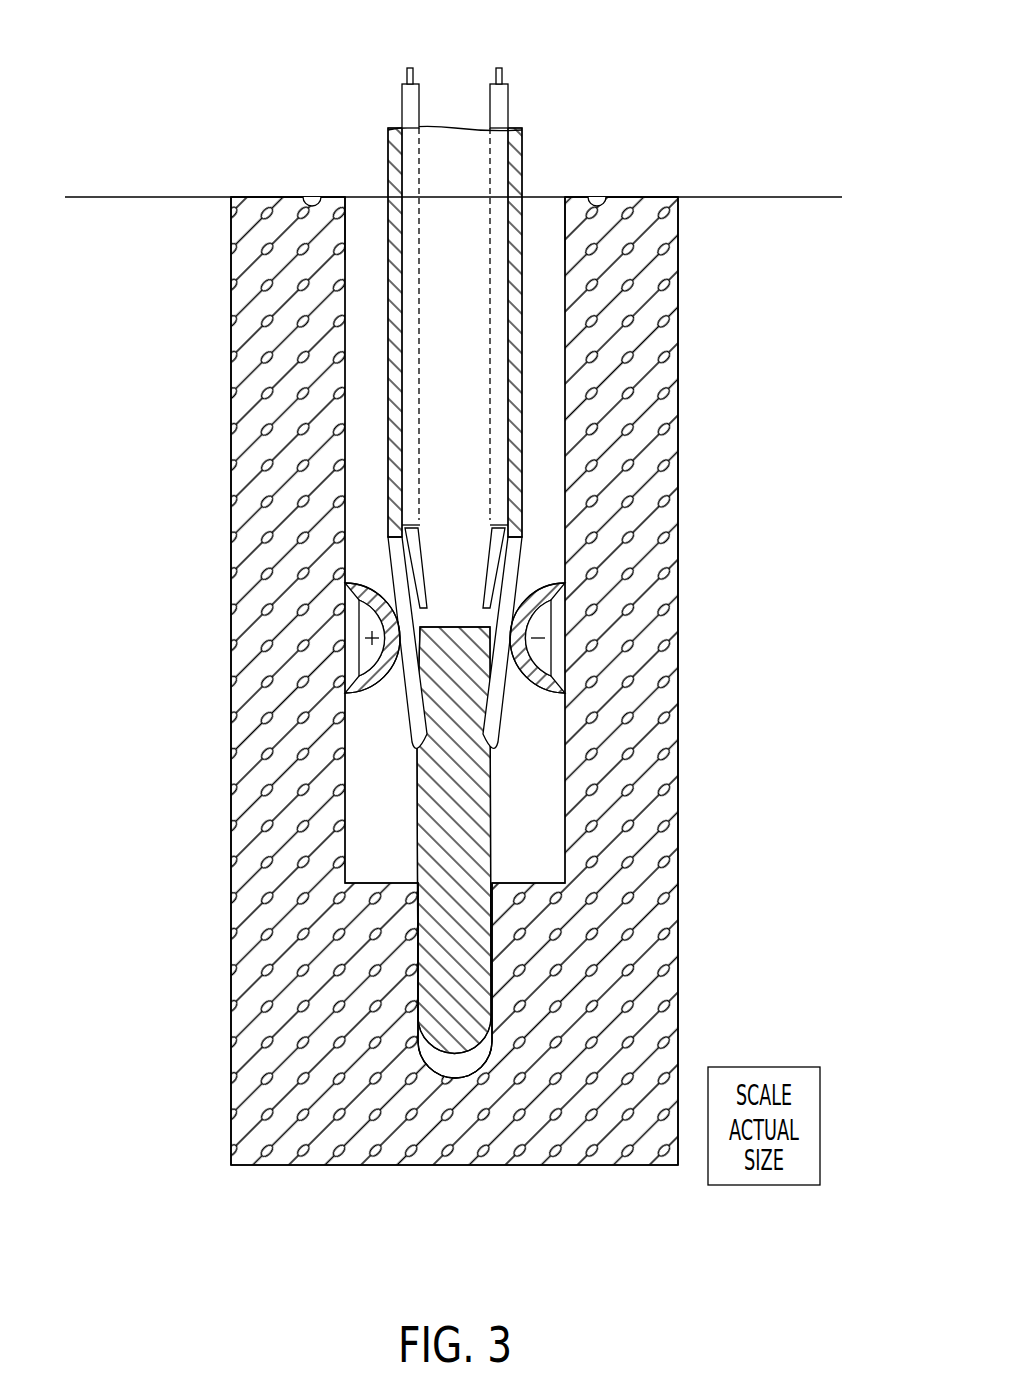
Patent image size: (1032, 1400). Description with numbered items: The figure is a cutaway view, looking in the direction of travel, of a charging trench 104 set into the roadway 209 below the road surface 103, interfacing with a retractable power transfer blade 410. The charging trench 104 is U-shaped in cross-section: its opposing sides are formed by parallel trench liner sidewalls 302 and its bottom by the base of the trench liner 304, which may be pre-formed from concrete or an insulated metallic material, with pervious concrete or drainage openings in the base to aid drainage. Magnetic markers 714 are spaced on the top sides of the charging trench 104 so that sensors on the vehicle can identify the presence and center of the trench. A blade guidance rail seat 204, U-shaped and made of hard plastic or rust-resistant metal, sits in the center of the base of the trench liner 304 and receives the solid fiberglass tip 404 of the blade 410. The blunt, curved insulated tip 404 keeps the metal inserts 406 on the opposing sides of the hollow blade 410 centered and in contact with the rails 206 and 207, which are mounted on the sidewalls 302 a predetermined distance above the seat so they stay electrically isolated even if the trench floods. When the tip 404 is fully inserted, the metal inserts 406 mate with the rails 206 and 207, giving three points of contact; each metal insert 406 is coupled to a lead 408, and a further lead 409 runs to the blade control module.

The road surface 103 is at (815, 195).
The charging trench 104 is at (585, 1210).
The blade guidance rail seat 204 is at (455, 1072).
The rail 206 is at (346, 636).
The rail 207 is at (567, 636).
The roadway 209 is at (70, 630).
The trench liner sidewalls 302 is at (364, 224).
The trench liner 304 is at (690, 908).
The solid fiberglass tip 404 is at (512, 913).
The metal inserts 406 is at (395, 726).
The lead 408 is at (412, 106).
The blade wire to control module 409 is at (500, 98).
The retractable power transfer blade 410 is at (208, 528).
The magnetic markers 714 is at (633, 165).